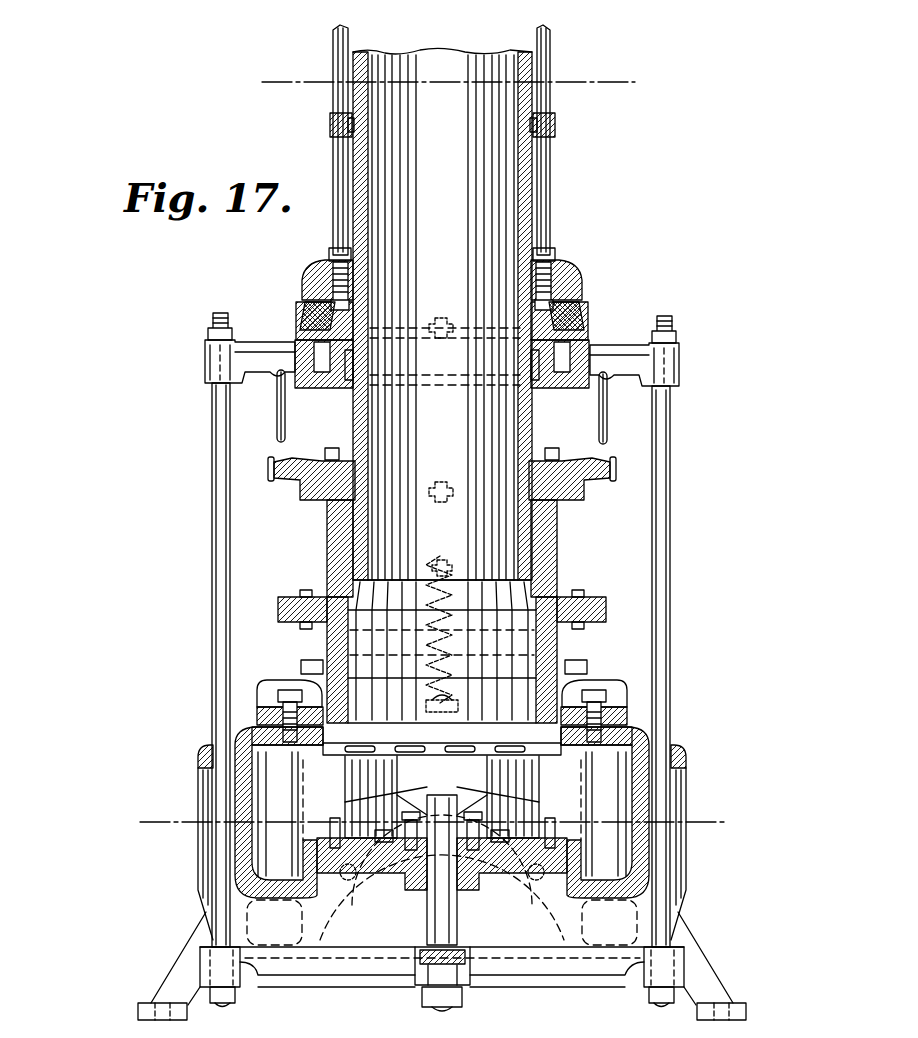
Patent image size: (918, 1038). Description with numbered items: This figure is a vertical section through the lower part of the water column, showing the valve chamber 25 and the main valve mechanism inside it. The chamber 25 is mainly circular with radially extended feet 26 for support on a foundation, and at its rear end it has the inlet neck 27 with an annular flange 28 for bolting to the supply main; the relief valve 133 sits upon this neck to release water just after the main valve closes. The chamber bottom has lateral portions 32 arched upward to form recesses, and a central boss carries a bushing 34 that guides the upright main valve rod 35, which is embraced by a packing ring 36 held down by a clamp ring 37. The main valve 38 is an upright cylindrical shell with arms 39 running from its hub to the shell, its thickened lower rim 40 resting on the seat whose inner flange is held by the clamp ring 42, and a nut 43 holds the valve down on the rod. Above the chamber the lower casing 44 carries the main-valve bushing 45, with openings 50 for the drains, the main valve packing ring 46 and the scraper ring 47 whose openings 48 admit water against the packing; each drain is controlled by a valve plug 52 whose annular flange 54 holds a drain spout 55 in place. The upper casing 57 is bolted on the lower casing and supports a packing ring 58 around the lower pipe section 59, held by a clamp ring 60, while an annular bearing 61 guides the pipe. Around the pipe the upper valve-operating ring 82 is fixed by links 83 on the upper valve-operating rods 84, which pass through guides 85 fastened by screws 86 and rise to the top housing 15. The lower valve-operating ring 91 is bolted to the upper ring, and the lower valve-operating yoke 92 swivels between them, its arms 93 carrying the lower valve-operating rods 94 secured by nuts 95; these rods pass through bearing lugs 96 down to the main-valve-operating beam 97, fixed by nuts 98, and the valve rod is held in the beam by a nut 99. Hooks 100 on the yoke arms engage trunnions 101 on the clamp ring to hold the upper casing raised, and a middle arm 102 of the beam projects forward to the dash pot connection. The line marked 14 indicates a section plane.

The section line 14- 14 is at (444, 83).
The top housing 15 is at (429, 824).
The valve chamber 25 is at (198, 770).
The feet 26 is at (176, 935).
The inlet neck 27 is at (478, 910).
The annular flange 28 is at (569, 800).
The lateral portions 32 is at (280, 905).
The bushing 34 is at (425, 895).
The main valve rod 35 is at (450, 700).
The packing ring 36 is at (466, 812).
The clamp ring 37 is at (492, 830).
The main valve 38 is at (350, 806).
The arms 39 is at (433, 795).
The lower rim 40 is at (550, 818).
The clamp ring 42 is at (528, 878).
The nut 43 is at (448, 700).
The lower casing 44 is at (338, 650).
The main-valve bushing 45 is at (565, 668).
The main valve packing ring 46 is at (305, 745).
The scraper ring 47 is at (335, 755).
The openings 48 is at (355, 752).
The openings 50 is at (300, 683).
The valve plug 52 is at (290, 680).
The annular flange 54 is at (280, 690).
The drain spout 55 is at (262, 692).
The upper casing 57 is at (327, 548).
The packing ring 58 is at (300, 490).
The lower pipe section 59 is at (533, 192).
The clamp ring 60 is at (331, 448).
The annular bearing 61 is at (557, 534).
The upper valve-operating ring 82 is at (447, 318).
The links 83 is at (315, 280).
The upper valve-operating rods 84 is at (551, 78).
The guides 85 is at (330, 124).
The screws 86 is at (348, 116).
The lower valve-operating ring 91 is at (458, 352).
The lower valve-operating yoke 92 is at (298, 340).
The arms 93 is at (208, 348).
The lower valve-operating rods 94 is at (212, 560).
The nuts 95 is at (212, 320).
The bearing lugs 96 is at (205, 748).
The main-valve-operating beam 97 is at (395, 978).
The nuts 98 is at (236, 1000).
The nut 99 is at (458, 1003).
The hooks 100 is at (277, 405).
The trunnions 101 is at (270, 462).
The middle arm 102 is at (472, 965).
The relief valve 133 is at (452, 650).